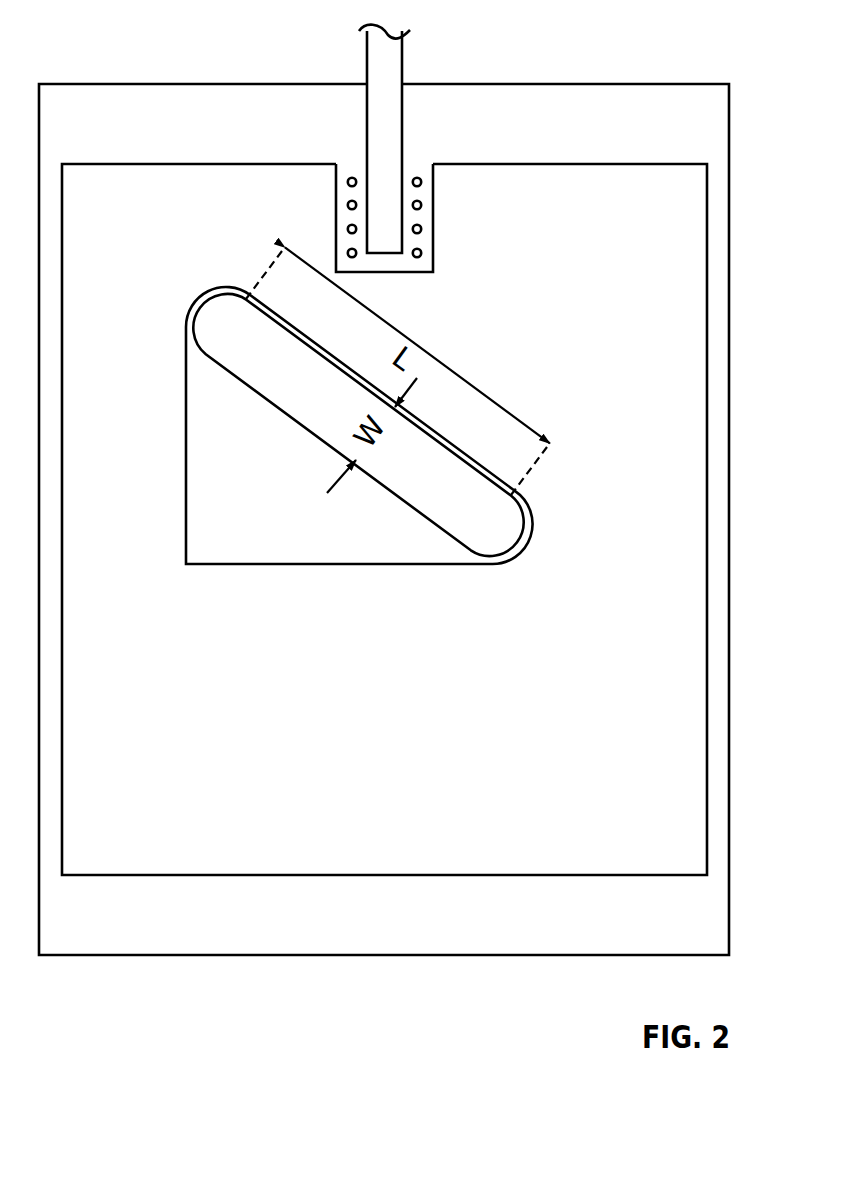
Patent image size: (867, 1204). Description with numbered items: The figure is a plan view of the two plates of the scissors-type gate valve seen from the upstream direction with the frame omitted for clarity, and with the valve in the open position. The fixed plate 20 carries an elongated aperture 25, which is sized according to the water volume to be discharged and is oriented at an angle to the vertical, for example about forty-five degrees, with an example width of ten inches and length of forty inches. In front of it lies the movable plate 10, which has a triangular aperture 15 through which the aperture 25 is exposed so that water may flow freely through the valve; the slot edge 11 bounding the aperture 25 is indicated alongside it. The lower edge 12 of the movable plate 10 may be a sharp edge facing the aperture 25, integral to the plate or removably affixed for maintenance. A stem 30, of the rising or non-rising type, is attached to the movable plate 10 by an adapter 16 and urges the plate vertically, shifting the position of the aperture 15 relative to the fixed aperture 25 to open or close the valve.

The movable plate 10 is at (657, 836).
The fixed plate 20 is at (690, 151).
The stem 30 is at (402, 52).
The adapter 16 is at (433, 217).
The slot 11 is at (300, 336).
The lower edge 12 is at (408, 565).
The aperture in the fixed plate 25 is at (296, 373).
The aperture in the sliding plate 15 is at (292, 514).